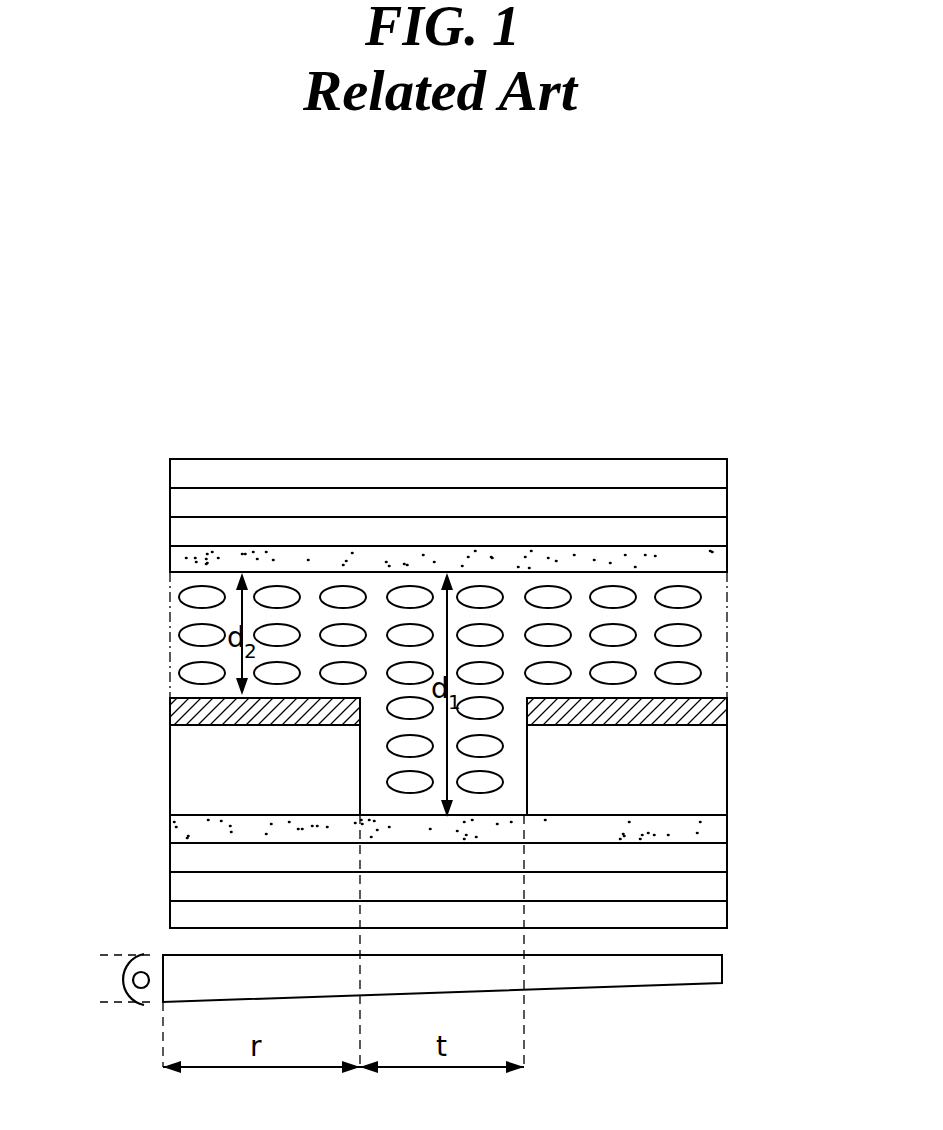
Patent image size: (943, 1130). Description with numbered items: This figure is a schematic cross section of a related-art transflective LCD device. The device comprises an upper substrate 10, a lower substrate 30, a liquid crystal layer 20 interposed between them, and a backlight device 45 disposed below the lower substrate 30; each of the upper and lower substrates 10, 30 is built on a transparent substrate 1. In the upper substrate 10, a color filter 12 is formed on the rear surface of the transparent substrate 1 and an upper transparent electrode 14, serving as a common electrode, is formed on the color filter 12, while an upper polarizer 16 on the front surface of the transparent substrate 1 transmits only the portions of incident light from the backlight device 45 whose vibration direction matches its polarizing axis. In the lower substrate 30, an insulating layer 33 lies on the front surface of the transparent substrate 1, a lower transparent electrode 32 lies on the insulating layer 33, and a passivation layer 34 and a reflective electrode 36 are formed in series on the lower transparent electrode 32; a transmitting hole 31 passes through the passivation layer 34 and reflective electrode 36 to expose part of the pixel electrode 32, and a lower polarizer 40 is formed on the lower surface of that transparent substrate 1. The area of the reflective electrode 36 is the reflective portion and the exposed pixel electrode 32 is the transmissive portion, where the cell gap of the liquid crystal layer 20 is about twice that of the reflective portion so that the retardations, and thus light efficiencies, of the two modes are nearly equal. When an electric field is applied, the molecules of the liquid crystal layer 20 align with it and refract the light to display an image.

The upper substrate 10 is at (152, 461).
The upper polarizer 16 is at (727, 467).
The transparent substrate 1 is at (727, 497).
The color filter 12 is at (727, 527).
The upper transparent electrode 14 is at (727, 556).
The liquid crystal layer 20 is at (152, 576).
The transmitting hole 31 is at (515, 758).
The lower substrate 30 is at (152, 930).
The reflective electrode 36 is at (727, 710).
The passivation layer 34 is at (727, 770).
The lower transparent electrode 32 is at (727, 823).
The insulating layer 33 is at (727, 852).
The lower polarizer 40 is at (727, 913).
The backlight device 45 is at (98, 956).